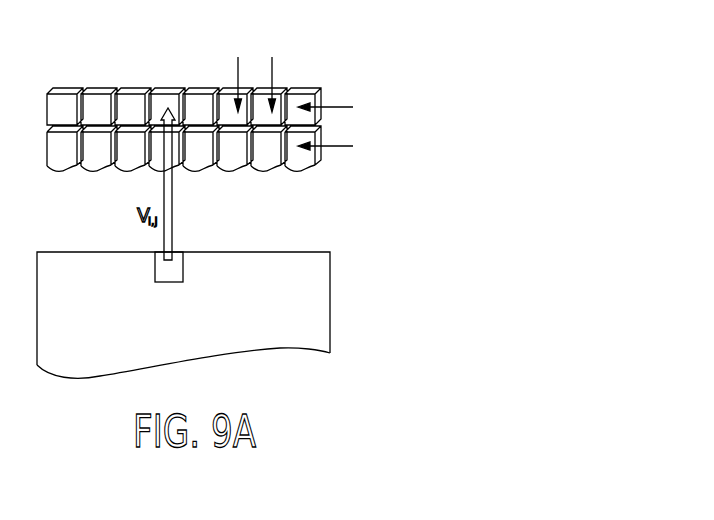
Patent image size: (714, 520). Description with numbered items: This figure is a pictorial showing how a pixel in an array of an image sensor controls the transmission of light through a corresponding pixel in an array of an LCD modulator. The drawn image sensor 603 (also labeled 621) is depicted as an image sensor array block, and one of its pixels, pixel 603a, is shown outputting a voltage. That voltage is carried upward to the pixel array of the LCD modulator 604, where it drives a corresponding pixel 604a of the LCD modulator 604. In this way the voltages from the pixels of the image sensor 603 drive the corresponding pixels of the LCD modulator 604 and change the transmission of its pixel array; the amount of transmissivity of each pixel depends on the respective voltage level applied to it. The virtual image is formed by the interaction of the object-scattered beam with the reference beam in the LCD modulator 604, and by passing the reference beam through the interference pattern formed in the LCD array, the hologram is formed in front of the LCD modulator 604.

The LCD modulator 604 is at (303, 86).
The pixel of LCD modulator 604a is at (165, 103).
The image sensor 603 is at (186, 321).
The sensor 621 is at (275, 327).
The pixel of image sensor 603a is at (155, 263).